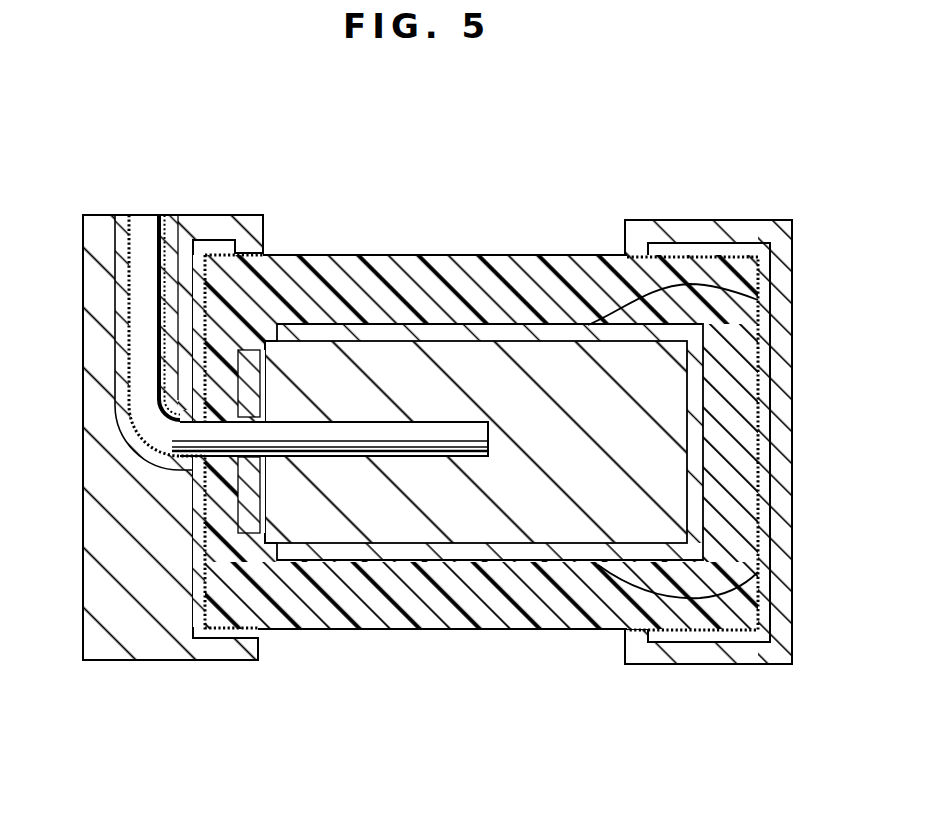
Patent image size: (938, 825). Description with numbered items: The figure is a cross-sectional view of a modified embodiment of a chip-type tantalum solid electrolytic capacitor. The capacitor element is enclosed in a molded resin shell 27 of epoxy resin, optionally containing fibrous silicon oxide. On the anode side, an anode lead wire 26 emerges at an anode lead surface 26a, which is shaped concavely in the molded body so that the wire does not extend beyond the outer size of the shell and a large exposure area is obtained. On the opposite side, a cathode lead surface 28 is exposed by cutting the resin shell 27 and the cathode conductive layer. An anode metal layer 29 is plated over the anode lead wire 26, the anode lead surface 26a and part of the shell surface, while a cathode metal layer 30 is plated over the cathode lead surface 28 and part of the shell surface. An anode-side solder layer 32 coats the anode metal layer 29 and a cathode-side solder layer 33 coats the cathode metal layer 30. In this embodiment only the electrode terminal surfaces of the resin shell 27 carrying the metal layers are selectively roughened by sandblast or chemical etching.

The anode lead wire 26 is at (147, 228).
The anode lead surface 26a is at (207, 590).
The resin shell 27 is at (358, 630).
The cathode lead surface 28 is at (760, 333).
The anode metal layer 29 is at (200, 547).
The cathode metal layer 30 is at (711, 640).
The anode-side solder layer 32 is at (98, 232).
The cathode-side solder layer 33 is at (775, 506).